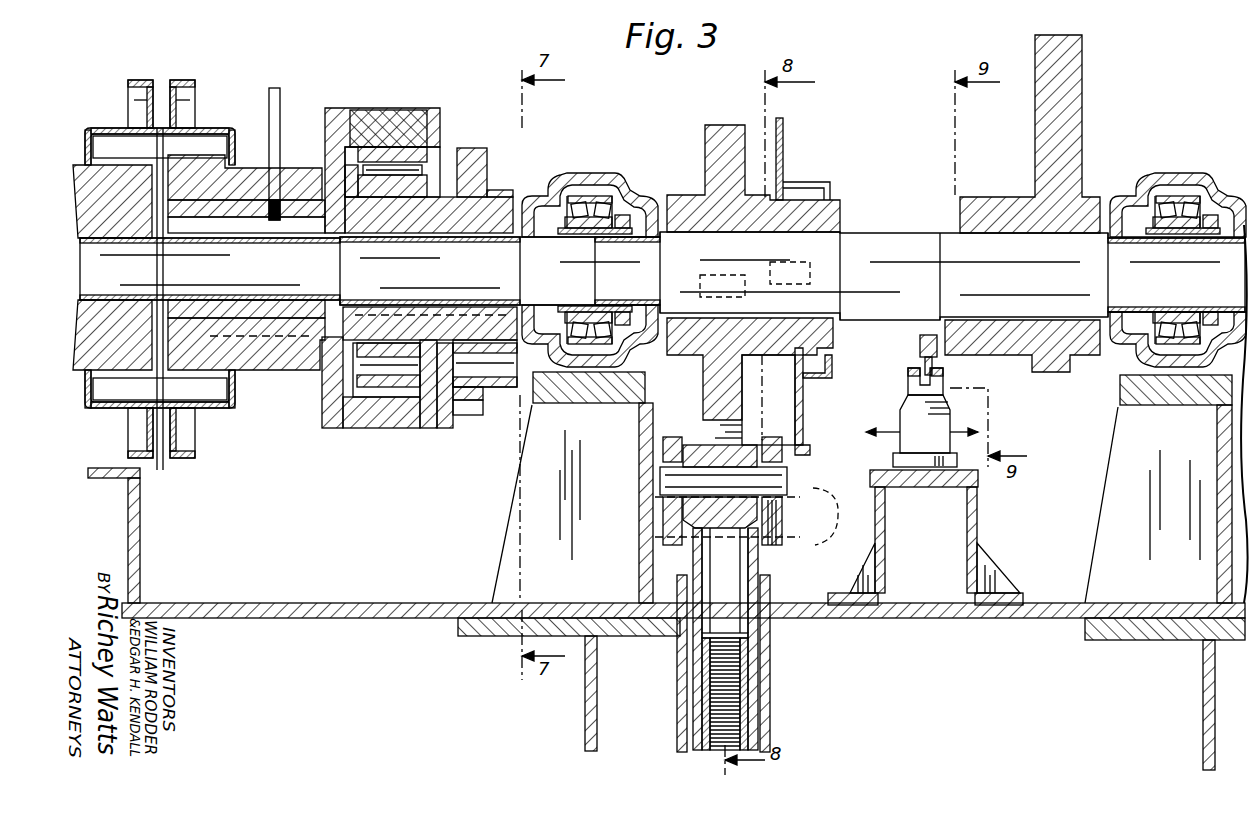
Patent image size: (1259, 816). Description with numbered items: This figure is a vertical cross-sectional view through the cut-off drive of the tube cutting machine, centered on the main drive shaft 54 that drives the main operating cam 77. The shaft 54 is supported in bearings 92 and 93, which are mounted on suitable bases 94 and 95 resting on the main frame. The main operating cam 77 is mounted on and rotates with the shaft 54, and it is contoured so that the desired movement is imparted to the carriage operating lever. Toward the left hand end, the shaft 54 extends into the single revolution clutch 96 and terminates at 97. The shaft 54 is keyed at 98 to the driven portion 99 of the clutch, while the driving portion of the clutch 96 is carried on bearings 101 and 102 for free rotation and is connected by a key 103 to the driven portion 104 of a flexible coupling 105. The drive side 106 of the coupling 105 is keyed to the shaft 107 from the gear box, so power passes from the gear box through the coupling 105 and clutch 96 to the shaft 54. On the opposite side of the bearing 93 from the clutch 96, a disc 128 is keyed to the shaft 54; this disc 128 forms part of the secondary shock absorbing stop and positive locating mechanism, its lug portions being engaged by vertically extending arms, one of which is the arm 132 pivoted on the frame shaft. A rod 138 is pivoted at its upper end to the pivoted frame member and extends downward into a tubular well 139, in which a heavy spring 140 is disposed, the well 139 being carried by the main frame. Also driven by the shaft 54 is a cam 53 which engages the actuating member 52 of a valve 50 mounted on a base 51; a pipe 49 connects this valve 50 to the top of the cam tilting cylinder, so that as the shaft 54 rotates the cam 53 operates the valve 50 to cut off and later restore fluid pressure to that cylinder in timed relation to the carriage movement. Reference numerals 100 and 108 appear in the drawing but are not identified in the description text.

The shaft 54 is at (892, 186).
The drive side of coupling 106 is at (125, 180).
The shaft from the gear box 107 is at (125, 380).
The flexible coupling 105 is at (142, 80).
The shaft termination 97 is at (160, 447).
The driven portion of the flexible coupling 104 is at (200, 180).
The bearing 101 is at (320, 205).
The bearing 102 is at (232, 195).
The key 103 is at (265, 360).
The lower collar block 100 is at (300, 330).
The single revolution clutch 96 is at (335, 115).
The retainer 108 is at (468, 150).
The driven portion of the clutch 99 is at (495, 195).
The key 98 is at (455, 300).
The bearing 93 is at (600, 188).
The base 95 is at (657, 440).
The disc 128 is at (710, 175).
The arm 132 is at (748, 432).
The rod 138 is at (712, 622).
The tubular well 139 is at (770, 693).
The spring 140 is at (745, 660).
The cam 53 is at (920, 350).
The actuating member 52 is at (922, 378).
The valve 50 is at (915, 418).
The pipe 49 is at (880, 432).
The base 51 is at (878, 510).
The main operating cam 77 is at (1052, 112).
The bearing 92 is at (1178, 260).
The base 94 is at (1217, 477).